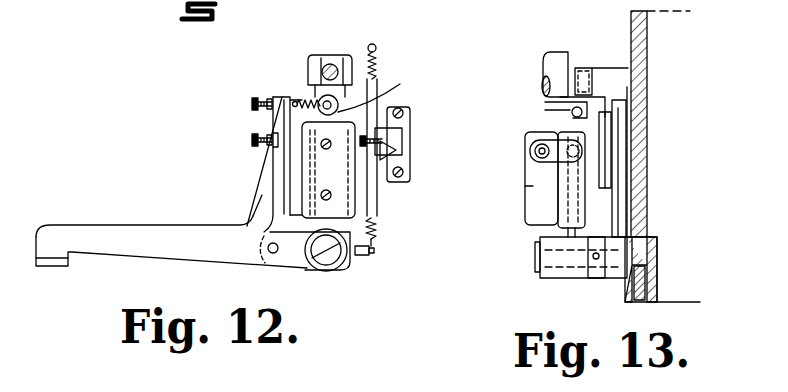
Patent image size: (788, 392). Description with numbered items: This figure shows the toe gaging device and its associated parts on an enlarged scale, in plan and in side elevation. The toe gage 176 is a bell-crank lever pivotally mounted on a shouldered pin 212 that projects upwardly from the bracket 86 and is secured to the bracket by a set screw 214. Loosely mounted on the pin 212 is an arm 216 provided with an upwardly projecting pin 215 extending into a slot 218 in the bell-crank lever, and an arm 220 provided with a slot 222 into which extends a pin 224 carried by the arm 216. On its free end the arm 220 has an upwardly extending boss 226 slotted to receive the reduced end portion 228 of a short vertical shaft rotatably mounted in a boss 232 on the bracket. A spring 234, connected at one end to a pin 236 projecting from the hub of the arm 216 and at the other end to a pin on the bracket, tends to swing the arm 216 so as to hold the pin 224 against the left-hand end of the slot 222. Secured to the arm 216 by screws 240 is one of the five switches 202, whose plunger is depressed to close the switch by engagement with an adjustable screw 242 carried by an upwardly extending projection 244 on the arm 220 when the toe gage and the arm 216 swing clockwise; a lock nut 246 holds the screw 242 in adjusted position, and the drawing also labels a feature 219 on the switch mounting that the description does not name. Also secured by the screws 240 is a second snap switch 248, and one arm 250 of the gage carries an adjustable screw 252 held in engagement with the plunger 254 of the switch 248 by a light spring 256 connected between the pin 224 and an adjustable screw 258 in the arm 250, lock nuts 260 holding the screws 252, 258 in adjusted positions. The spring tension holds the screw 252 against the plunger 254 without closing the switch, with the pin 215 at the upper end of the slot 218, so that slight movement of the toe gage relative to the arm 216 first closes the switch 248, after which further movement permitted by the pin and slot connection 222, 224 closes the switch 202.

In FIG. 13, the bracket 86 is at (640, 130).
In FIG. 12, the toe gage 176 is at (128, 248).
In FIG. 12, the switch 202 is at (298, 200).
In FIG. 13, the switch 202 is at (532, 189).
In FIG. 12, the shouldered pin 212 is at (331, 261).
In FIG. 13, the shouldered pin 212 is at (560, 273).
In FIG. 13, the set screw 214 is at (648, 285).
In FIG. 12, the pin 215 is at (278, 253).
In FIG. 12, the arm 216 is at (377, 197).
In FIG. 13, the arm 216 is at (597, 282).
In FIG. 12, the slot 218 is at (272, 258).
In FIG. 12, the recess 219 is at (374, 133).
In FIG. 12, the arm 220 is at (273, 110).
In FIG. 13, the arm 220 is at (613, 282).
In FIG. 12, the slot 222 is at (350, 105).
In FIG. 12, the pin 224 is at (343, 108).
In FIG. 13, the pin 224 is at (572, 103).
In FIG. 12, the boss 226 is at (350, 55).
In FIG. 13, the boss 226 is at (582, 68).
In FIG. 12, the reduced end portion 228 is at (330, 62).
In FIG. 13, the reduced end portion 228 is at (587, 70).
In FIG. 13, the boss 232 is at (556, 58).
In FIG. 12, the spring 234 is at (373, 232).
In FIG. 12, the pin 236 is at (362, 256).
In FIG. 12, the screws 240 is at (326, 150).
In FIG. 12, the adjustable screw 242 is at (384, 141).
In FIG. 13, the adjustable screw 242 is at (535, 149).
In FIG. 13, the projection 244 is at (548, 158).
In FIG. 12, the lock nut 246 is at (396, 160).
In FIG. 12, the snap switch 248 is at (282, 211).
In FIG. 13, the snap switch 248 is at (563, 207).
In FIG. 12, the arm 250 is at (268, 183).
In FIG. 13, the arm 250 is at (580, 123).
In FIG. 12, the adjustable screw 252 is at (252, 140).
In FIG. 12, the plunger 254 is at (260, 132).
In FIG. 12, the light spring 256 is at (307, 97).
In FIG. 12, the adjustable screw 258 is at (253, 97).
In FIG. 12, the lock nuts 260 is at (271, 96).